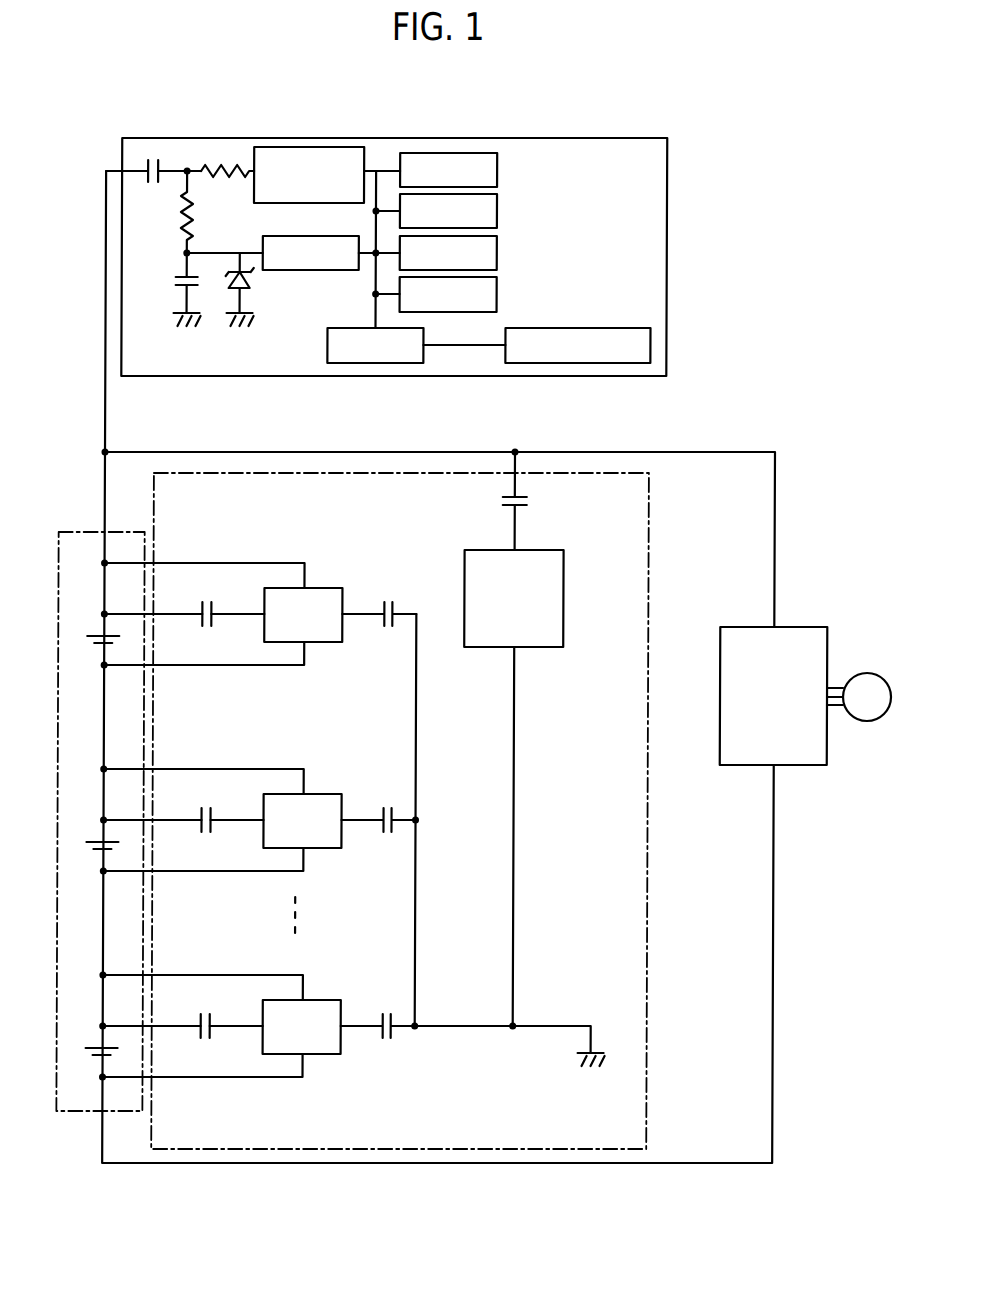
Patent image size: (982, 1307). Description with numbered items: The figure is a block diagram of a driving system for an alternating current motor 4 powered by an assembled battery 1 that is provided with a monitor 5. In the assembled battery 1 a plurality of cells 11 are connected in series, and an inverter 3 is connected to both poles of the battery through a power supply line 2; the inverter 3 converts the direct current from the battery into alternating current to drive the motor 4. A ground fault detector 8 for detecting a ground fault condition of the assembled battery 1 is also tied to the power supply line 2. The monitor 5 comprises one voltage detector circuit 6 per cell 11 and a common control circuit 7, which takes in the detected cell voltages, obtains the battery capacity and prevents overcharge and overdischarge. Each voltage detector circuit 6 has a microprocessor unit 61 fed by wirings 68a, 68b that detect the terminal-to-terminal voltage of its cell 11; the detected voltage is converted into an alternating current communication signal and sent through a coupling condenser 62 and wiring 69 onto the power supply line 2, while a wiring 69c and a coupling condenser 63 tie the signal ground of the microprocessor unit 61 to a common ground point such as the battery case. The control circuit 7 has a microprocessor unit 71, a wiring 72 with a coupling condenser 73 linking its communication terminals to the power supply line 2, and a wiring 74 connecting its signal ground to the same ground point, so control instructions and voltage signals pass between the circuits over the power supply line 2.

The assembled battery 1 is at (78, 783).
The power supply line 2 is at (395, 451).
The inverter 3 is at (812, 626).
The alternating current motor 4 is at (870, 672).
The monitor 5 is at (650, 525).
The voltage detector circuit 6 is at (259, 823).
The control circuit 7 is at (529, 739).
The ground fault detector 8 is at (537, 137).
The cell 11 is at (92, 632).
The microprocessor unit 61 is at (328, 633).
The coupling condenser 62 is at (208, 601).
The coupling condenser 63 is at (390, 600).
The wiring 68a is at (197, 560).
The wiring 68b is at (243, 667).
The wiring 69 is at (176, 612).
The wiring 69c is at (417, 723).
The microprocessor unit 71 is at (565, 605).
The wiring 72 is at (512, 533).
The coupling condenser 73 is at (500, 503).
The wiring 74 is at (515, 690).